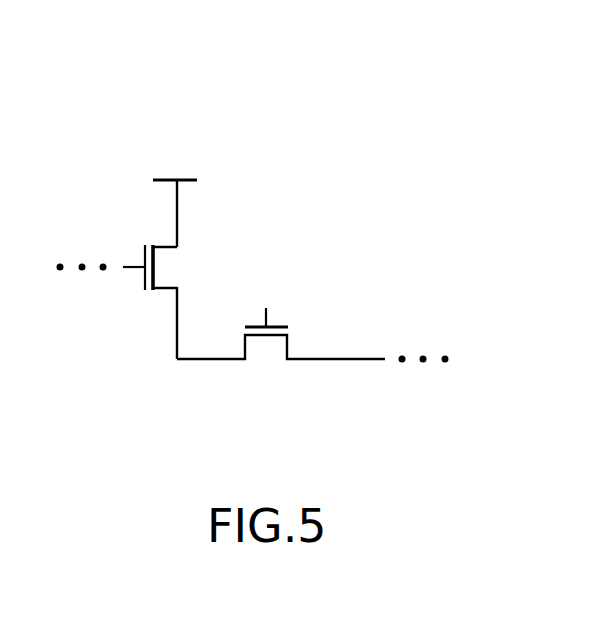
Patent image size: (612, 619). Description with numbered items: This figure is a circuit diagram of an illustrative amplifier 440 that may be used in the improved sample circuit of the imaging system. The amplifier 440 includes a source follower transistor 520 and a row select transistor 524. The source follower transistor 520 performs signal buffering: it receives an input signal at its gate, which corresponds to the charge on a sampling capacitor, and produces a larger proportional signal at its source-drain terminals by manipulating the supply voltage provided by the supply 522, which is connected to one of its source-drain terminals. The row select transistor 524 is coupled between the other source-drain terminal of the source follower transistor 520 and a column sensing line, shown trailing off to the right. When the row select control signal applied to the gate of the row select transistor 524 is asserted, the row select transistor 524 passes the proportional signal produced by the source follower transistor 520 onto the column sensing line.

The amplifier 440 is at (388, 100).
The source follower transistor 520 is at (155, 245).
The supply 522 is at (187, 181).
The row select transistor 524 is at (288, 348).